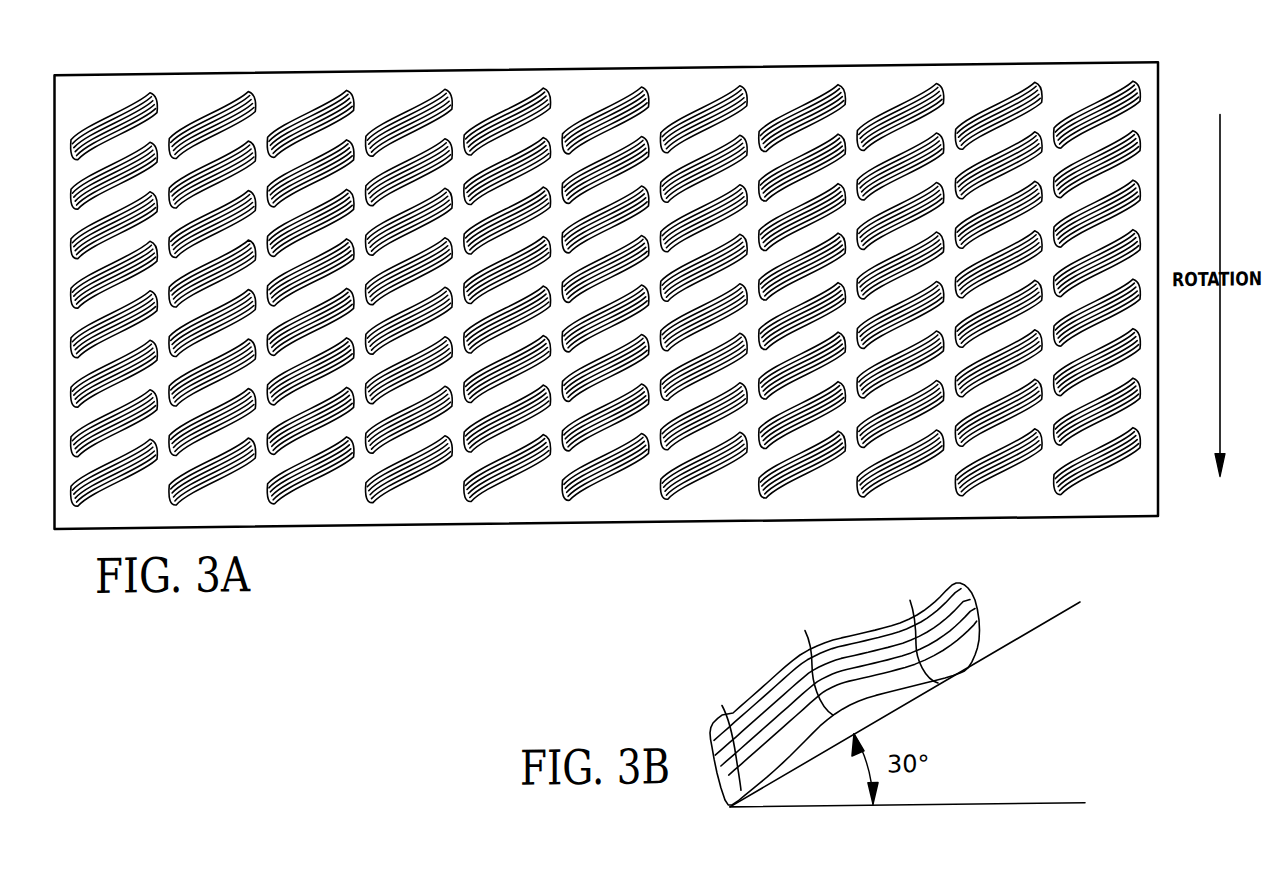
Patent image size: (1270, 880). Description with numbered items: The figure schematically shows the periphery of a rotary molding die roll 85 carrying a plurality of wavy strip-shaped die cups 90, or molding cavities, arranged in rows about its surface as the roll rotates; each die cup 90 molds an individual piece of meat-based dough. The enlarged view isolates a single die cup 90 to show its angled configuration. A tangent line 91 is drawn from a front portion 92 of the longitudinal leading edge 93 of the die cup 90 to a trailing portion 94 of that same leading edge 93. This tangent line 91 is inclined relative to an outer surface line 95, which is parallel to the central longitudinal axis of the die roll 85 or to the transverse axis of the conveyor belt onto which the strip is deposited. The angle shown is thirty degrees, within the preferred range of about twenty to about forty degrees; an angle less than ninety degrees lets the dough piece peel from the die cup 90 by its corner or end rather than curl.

In FIG. 3A, the rotary molding die roll 85 is at (1147, 120).
In FIG. 3A, the die cup 90 is at (1110, 110).
In FIG. 3B, the die cup 90 is at (985, 622).
In FIG. 3B, the tangent line 91 is at (1023, 648).
In FIG. 3B, the front portion 92 is at (722, 714).
In FIG. 3B, the longitudinal leading edge 93 is at (805, 640).
In FIG. 3B, the trailing portion 94 is at (910, 611).
In FIG. 3B, the outer surface line 95 is at (1060, 816).